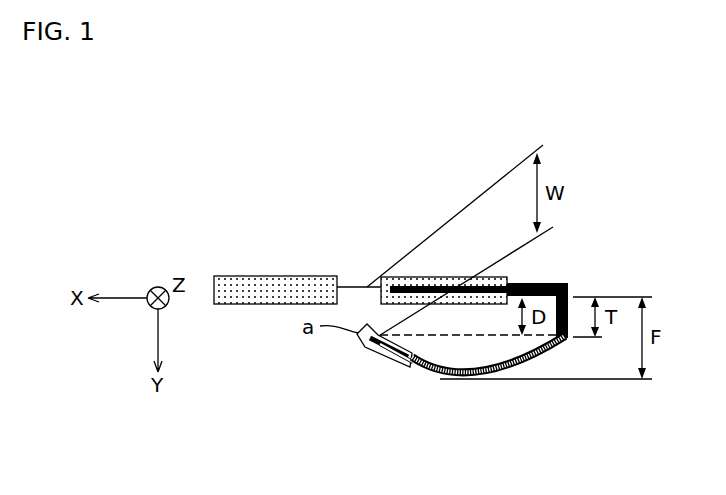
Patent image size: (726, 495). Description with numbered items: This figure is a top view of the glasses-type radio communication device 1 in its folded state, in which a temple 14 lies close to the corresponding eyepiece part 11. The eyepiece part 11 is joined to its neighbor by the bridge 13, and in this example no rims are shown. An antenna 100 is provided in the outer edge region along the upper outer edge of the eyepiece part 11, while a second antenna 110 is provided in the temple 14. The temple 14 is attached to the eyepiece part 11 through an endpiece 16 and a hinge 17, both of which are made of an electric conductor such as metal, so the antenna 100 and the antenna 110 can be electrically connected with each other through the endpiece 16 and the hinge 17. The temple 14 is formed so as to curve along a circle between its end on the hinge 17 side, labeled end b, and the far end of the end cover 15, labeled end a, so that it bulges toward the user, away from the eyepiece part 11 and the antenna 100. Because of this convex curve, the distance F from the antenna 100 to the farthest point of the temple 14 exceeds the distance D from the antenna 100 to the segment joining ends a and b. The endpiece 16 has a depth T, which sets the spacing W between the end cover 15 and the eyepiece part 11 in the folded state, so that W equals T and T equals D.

The glasses-type radio communication device 1 is at (657, 187).
The eyepiece part 11 is at (280, 276).
The bridge 13 is at (352, 287).
The antenna 100 is at (445, 277).
The endpiece 16 is at (555, 283).
The end cover 15 is at (380, 353).
The antenna 110 is at (423, 370).
The temple 14 is at (532, 368).
The hinge 17 is at (569, 338).